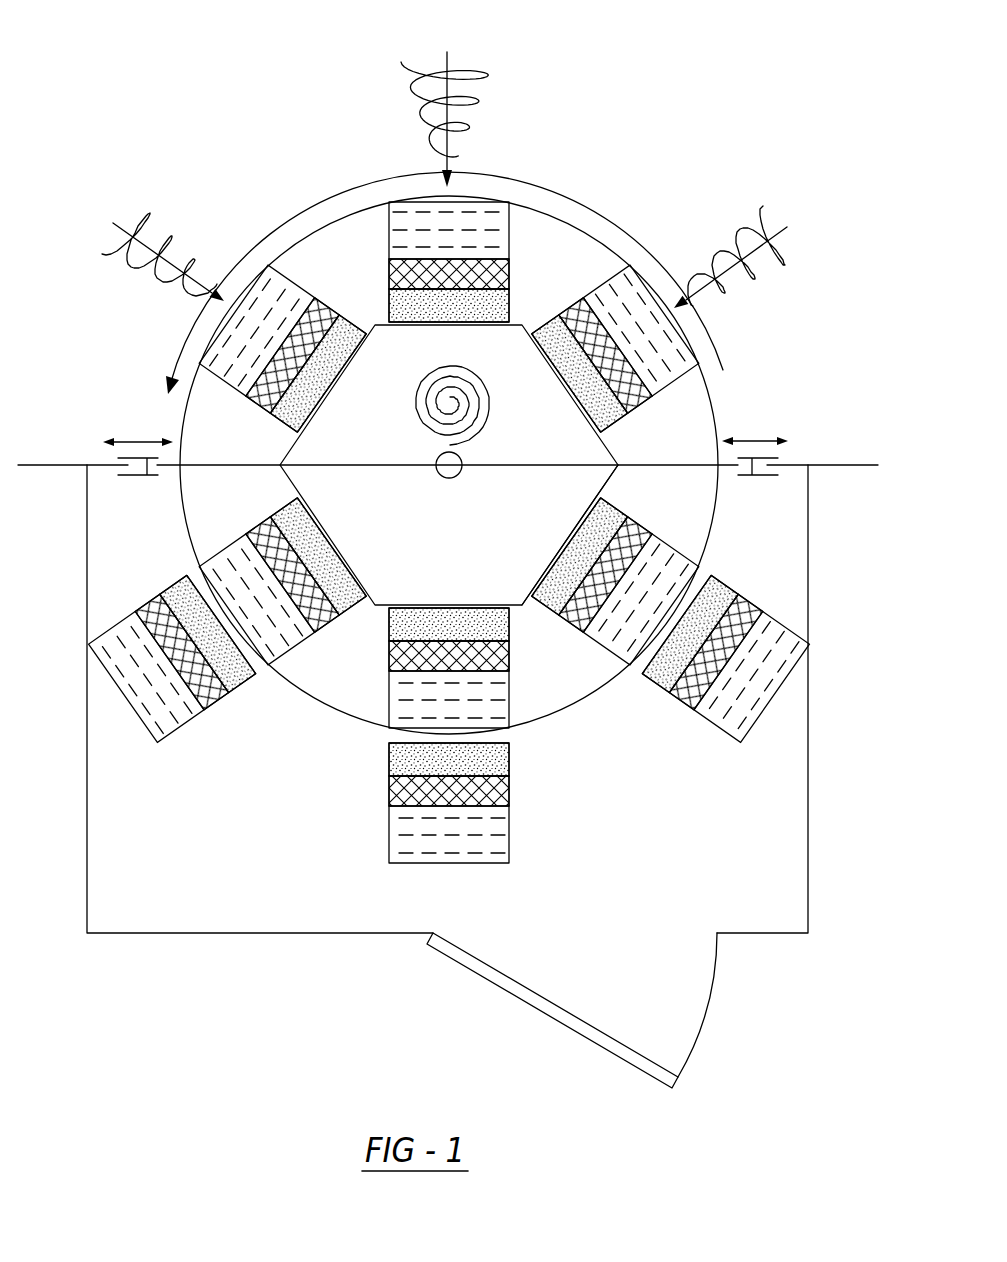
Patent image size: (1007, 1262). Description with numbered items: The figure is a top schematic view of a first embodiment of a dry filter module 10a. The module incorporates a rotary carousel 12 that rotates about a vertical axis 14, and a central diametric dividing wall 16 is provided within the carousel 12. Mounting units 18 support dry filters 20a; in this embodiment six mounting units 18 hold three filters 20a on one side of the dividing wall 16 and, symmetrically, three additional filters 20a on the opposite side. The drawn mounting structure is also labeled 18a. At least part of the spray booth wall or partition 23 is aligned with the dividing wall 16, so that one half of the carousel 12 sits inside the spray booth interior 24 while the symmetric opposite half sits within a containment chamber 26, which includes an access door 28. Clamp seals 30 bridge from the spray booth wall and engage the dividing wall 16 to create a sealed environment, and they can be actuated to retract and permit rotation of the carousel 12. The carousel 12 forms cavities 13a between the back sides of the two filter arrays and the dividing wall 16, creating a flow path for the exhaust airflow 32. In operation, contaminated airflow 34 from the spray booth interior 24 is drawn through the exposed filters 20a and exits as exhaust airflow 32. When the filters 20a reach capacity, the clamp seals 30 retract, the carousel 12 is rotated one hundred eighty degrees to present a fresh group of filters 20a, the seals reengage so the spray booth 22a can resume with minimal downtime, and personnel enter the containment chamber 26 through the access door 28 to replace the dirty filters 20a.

The dry filter module 10a is at (586, 134).
The rotary carousel 12 is at (720, 515).
The cavities 13a is at (373, 442).
The vertical axis 14 is at (447, 479).
The central diametric dividing wall 16 is at (580, 468).
The mounting units 18 is at (587, 657).
The magnet block 18a is at (693, 393).
The dry filters 20a is at (590, 290).
The spray booth 22a is at (116, 357).
The spray booth wall or partition 23 is at (43, 465).
The spray booth interior 24 is at (288, 192).
The containment chamber 26 is at (756, 812).
The access door 28 is at (480, 978).
The clamp seals 30 is at (136, 478).
The exhaust airflow 32 is at (493, 402).
The contaminated airflow 34 is at (408, 65).